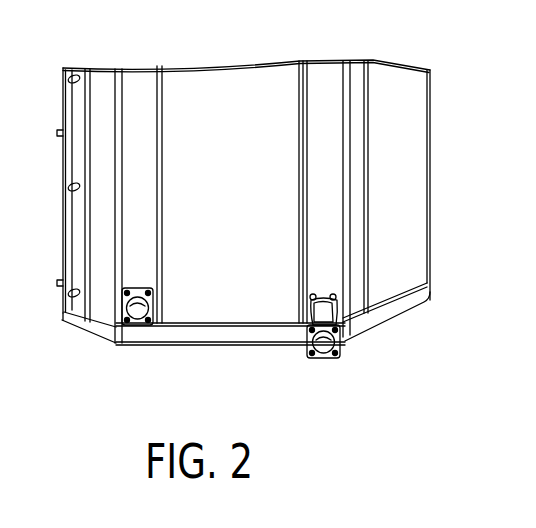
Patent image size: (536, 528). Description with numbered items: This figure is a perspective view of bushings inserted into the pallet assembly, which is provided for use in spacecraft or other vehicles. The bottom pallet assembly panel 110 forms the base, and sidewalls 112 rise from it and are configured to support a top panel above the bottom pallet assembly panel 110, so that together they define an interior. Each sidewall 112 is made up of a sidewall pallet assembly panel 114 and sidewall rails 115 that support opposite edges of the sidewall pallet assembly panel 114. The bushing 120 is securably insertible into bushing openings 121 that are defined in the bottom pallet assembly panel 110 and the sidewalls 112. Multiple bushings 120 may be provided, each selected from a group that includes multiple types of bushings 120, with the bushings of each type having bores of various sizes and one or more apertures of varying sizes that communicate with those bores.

The bottom pallet assembly panel 110 is at (240, 324).
The sidewall 112 is at (74, 75).
The sidewall pallet assembly panel 114 is at (203, 100).
The sidewall rail 115 is at (120, 68).
The bushing 120 is at (138, 312).
The bushing opening 121 is at (336, 303).